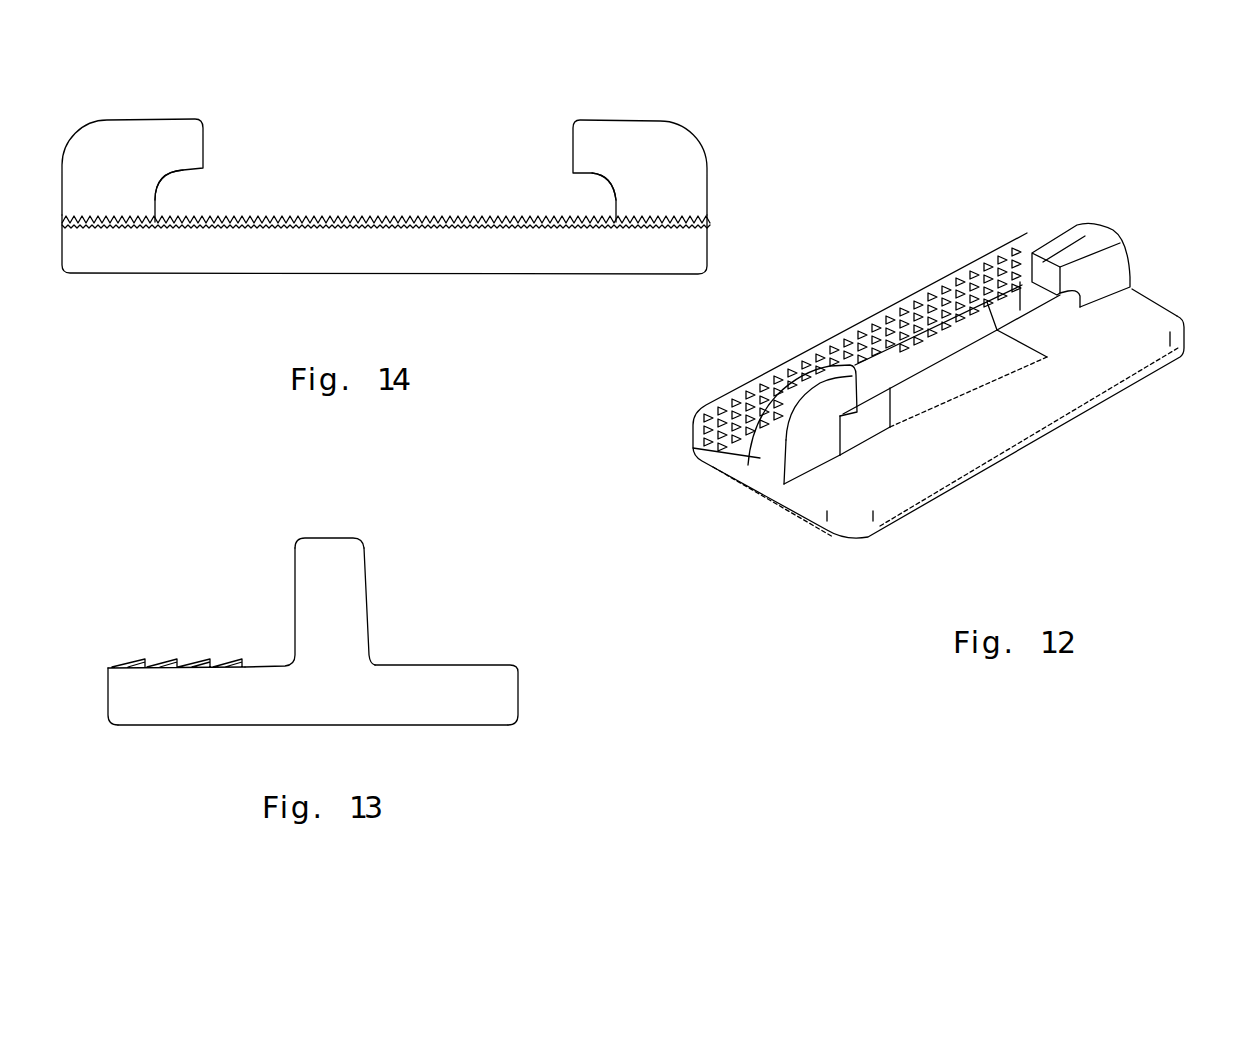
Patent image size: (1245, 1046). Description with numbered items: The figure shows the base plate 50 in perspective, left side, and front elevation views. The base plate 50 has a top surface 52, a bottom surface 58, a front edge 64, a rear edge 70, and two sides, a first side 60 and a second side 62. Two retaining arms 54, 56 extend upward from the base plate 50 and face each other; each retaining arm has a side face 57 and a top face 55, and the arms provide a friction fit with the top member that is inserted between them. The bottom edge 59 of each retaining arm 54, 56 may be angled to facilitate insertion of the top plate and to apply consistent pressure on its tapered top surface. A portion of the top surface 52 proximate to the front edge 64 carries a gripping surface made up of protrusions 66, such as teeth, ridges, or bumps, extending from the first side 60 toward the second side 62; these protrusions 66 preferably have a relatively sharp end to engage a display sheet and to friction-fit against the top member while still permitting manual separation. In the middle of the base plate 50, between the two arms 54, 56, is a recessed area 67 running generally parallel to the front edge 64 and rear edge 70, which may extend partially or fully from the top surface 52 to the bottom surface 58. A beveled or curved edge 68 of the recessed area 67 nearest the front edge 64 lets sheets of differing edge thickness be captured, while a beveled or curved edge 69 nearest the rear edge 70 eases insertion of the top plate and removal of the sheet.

In FIG. 14, the base plate 50 is at (415, 192).
In FIG. 13, the base plate 50 is at (325, 627).
In FIG. 12, the base plate 50 is at (943, 418).
In FIG. 13, the top surface 52 is at (272, 663).
In FIG. 12, the top surface 52 is at (1068, 367).
In FIG. 14, the retaining arm 54 is at (107, 150).
In FIG. 12, the retaining arm 54 is at (780, 410).
In FIG. 13, the top face 55 is at (328, 532).
In FIG. 12, the top face 55 is at (813, 385).
In FIG. 14, the retaining arm 56 is at (636, 143).
In FIG. 12, the retaining arm 56 is at (1110, 225).
In FIG. 13, the side face 57 is at (368, 575).
In FIG. 12, the side face 57 is at (814, 442).
In FIG. 13, the bottom surface 58 is at (234, 744).
In FIG. 12, the bottom surface 58 is at (972, 500).
In FIG. 14, the bottom edge 59 is at (178, 177).
In FIG. 12, the bottom edge 59 is at (849, 456).
In FIG. 12, the first side 60 is at (793, 500).
In FIG. 12, the second side 62 is at (1163, 300).
In FIG. 13, the front edge 64 is at (107, 690).
In FIG. 12, the front edge 64 is at (890, 297).
In FIG. 14, the protrusions 66 is at (368, 215).
In FIG. 13, the protrusions 66 is at (177, 657).
In FIG. 12, the protrusions 66 is at (773, 433).
In FIG. 12, the recessed area 67 is at (988, 358).
In FIG. 12, the beveled or curved edge 68 is at (945, 345).
In FIG. 12, the beveled or curved edge 69 is at (881, 436).
In FIG. 13, the rear edge 70 is at (522, 703).
In FIG. 12, the rear edge 70 is at (977, 457).